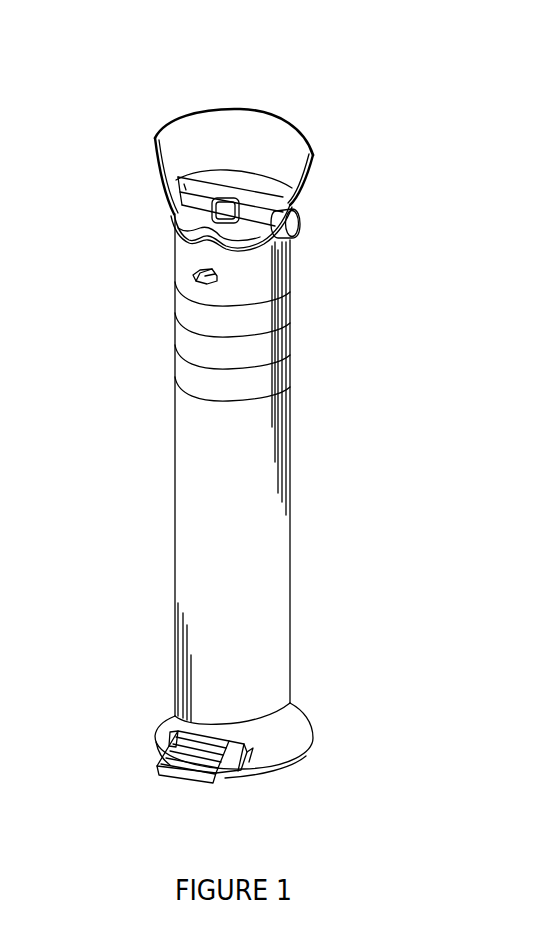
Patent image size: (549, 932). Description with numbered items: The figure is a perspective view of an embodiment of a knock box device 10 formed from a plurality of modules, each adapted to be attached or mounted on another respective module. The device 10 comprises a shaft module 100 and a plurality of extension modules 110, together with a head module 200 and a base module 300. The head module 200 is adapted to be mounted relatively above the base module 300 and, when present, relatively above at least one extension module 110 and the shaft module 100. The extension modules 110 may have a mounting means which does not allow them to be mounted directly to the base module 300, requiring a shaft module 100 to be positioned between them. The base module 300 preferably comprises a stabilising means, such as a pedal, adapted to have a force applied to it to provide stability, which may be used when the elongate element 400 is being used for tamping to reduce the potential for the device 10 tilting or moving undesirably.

The knock box device 10 is at (422, 122).
The shaft module 100 is at (270, 566).
The extension module 110 is at (291, 301).
The head module 200 is at (292, 259).
The base module 300 is at (262, 716).
The elongate element 400 is at (172, 206).